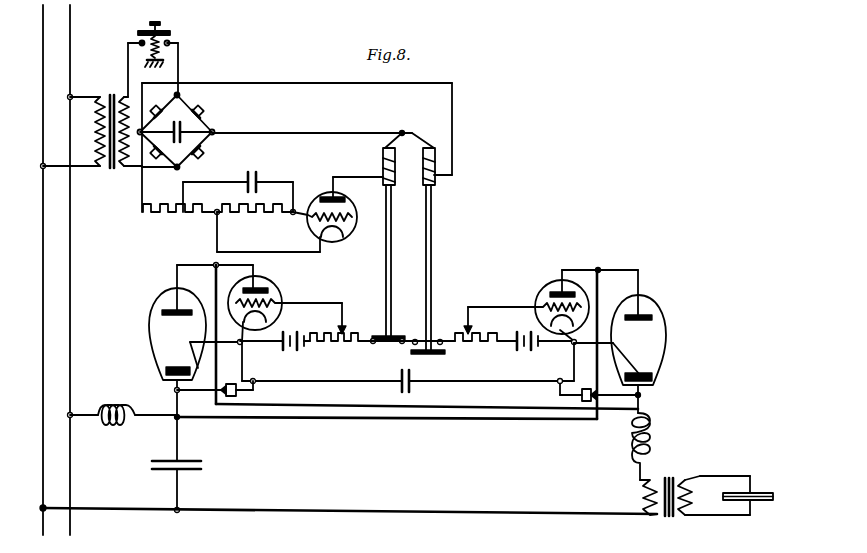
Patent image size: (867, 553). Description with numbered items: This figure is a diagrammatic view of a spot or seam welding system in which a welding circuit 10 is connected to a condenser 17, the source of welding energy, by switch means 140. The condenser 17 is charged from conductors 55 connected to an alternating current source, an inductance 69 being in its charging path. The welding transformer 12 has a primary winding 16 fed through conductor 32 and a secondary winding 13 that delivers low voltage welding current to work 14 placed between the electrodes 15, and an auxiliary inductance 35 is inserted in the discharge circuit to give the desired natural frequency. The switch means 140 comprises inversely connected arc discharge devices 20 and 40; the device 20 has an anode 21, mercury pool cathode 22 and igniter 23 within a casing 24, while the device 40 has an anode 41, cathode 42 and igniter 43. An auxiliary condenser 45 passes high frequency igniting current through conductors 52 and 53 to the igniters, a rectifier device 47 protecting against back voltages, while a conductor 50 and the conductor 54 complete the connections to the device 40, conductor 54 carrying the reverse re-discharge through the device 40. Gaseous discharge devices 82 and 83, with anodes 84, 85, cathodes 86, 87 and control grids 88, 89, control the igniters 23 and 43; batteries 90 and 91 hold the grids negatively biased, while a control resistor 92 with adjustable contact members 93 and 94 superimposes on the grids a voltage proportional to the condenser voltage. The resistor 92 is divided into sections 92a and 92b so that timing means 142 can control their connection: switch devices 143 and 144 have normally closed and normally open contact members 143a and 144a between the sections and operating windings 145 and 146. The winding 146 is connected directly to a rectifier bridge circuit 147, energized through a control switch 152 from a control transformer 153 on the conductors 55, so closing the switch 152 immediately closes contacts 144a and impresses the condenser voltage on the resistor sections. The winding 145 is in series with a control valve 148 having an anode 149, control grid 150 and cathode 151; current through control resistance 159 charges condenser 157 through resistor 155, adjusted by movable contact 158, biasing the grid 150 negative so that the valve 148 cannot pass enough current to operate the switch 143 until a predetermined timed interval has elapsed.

The conductors 55 is at (43, 50).
The control switch 152 is at (172, 35).
The control transformer 153 is at (112, 97).
The rectifier bridge circuit 147 is at (200, 122).
The timing means 142 is at (265, 205).
The condenser 157 is at (258, 180).
The movable contact 158 is at (186, 208).
The control resistance 159 is at (185, 214).
The resistor 155 is at (252, 214).
The control valve 148 is at (302, 222).
The anode 149 is at (322, 199).
The control grid 150 is at (350, 223).
The cathode 151 is at (322, 244).
The switch means 140 is at (408, 230).
The operating winding 145 is at (383, 160).
The operating winding 146 is at (429, 147).
The switch device 143 is at (386, 266).
The switch device 144 is at (431, 266).
The contact members 143a is at (392, 335).
The contact members 144a is at (434, 349).
The arc discharge device 20 is at (186, 341).
The anode 21 is at (182, 305).
The igniter 23 is at (193, 358).
The mercury pool cathode 22 is at (166, 372).
The casing 24 is at (151, 347).
The gaseous discharge device 82 is at (269, 301).
The anode 84 is at (246, 288).
The control grid 88 is at (278, 303).
The cathode 86 is at (275, 322).
The adjustable contact member 93 is at (344, 328).
The battery 90 is at (292, 349).
The control resistor 92 is at (392, 345).
The resistor section 92a is at (341, 350).
The resistor section 92b is at (486, 352).
The adjustable contact member 94 is at (471, 330).
The battery 91 is at (521, 350).
The gaseous discharge device 83 is at (576, 303).
The anode 85 is at (566, 291).
The control grid 89 is at (543, 305).
The cathode 87 is at (562, 333).
The arc discharge device 40 is at (633, 341).
The anode 41 is at (648, 314).
The igniter 43 is at (631, 364).
The mercury pool cathode 42 is at (654, 380).
The conductor 52 is at (321, 382).
The conductor 50 is at (374, 404).
The auxiliary condenser 45 is at (410, 384).
The conductor 53 is at (510, 382).
The rectifier device 47 is at (230, 384).
The conductor 54 is at (440, 421).
The inductance 69 is at (117, 404).
The condenser 17 is at (192, 459).
The conductor 32 is at (534, 516).
The welding circuit 10 is at (691, 477).
The auxiliary inductance 35 is at (630, 440).
The welding transformer 12 is at (687, 509).
The primary winding 16 is at (655, 516).
The secondary winding 13 is at (690, 514).
The work 14 is at (762, 493).
The electrodes 15 is at (749, 490).